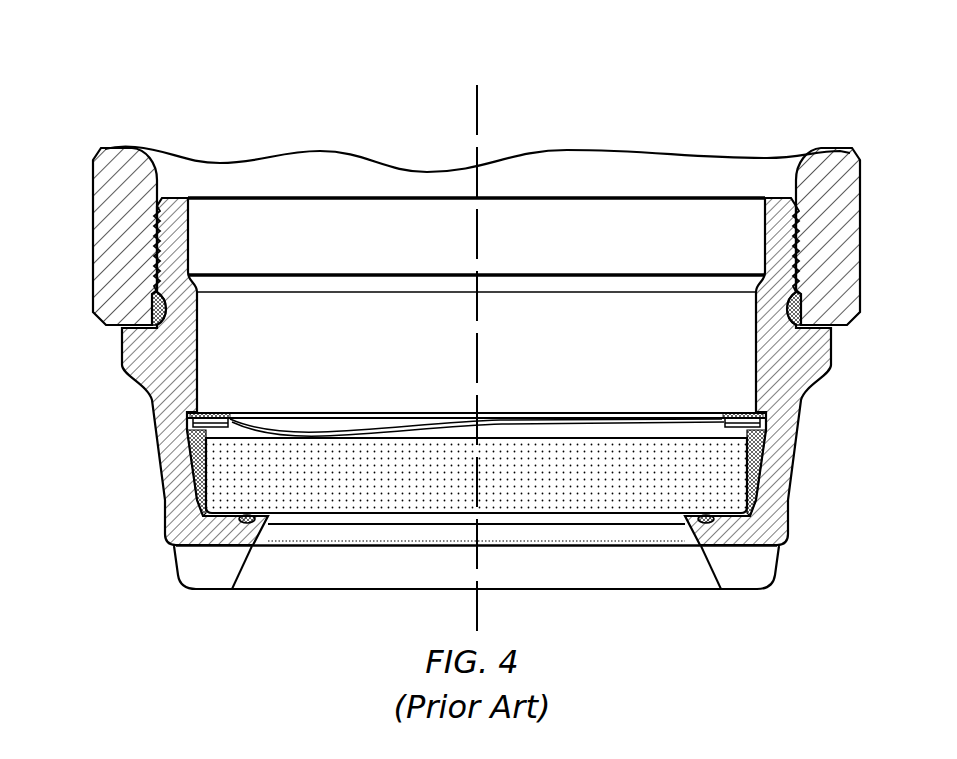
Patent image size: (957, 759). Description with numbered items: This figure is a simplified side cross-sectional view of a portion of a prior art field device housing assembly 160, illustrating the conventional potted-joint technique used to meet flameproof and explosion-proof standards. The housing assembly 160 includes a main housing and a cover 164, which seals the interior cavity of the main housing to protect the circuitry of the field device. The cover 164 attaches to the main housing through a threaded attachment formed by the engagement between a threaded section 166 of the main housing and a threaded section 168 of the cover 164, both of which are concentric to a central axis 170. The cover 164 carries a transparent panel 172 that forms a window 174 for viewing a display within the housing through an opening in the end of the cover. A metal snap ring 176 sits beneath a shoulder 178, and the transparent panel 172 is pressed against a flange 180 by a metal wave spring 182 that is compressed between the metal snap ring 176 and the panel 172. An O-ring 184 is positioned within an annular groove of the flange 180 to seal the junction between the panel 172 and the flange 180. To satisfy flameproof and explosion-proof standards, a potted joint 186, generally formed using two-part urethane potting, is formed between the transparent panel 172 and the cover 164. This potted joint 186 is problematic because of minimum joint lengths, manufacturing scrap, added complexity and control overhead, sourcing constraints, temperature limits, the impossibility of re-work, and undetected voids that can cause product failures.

The field device housing assembly 160 is at (160, 75).
The cover 164 is at (818, 368).
The threaded section of the main housing 166 is at (172, 232).
The threaded section of the cover 168 is at (140, 256).
The central axis 170 is at (480, 108).
The transparent panel 172 is at (369, 492).
The window 174 is at (630, 569).
The metal snap ring 176 is at (298, 410).
The shoulder 178 is at (176, 406).
The flange 180 is at (737, 538).
The metal wave spring 182 is at (228, 416).
The O-ring 184 is at (845, 202).
The potted joint 186 is at (766, 458).